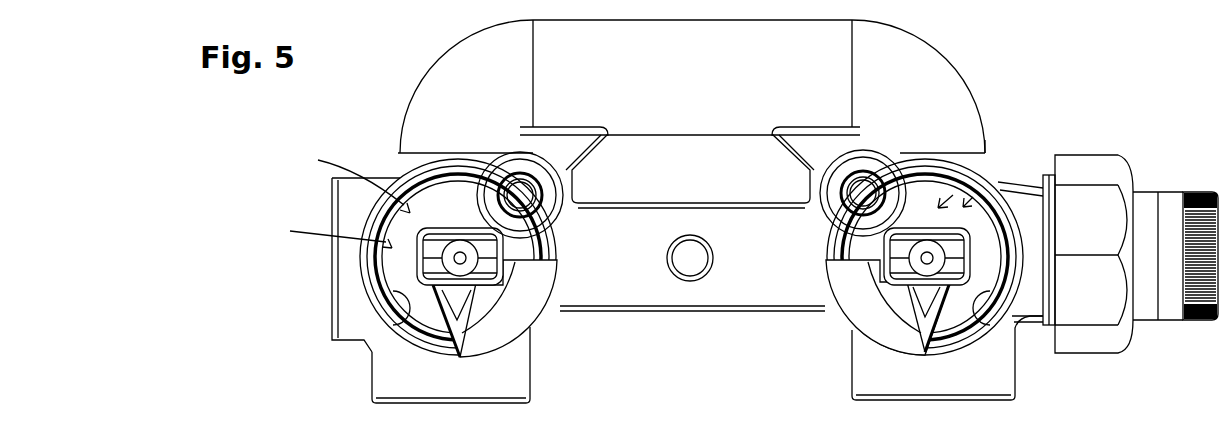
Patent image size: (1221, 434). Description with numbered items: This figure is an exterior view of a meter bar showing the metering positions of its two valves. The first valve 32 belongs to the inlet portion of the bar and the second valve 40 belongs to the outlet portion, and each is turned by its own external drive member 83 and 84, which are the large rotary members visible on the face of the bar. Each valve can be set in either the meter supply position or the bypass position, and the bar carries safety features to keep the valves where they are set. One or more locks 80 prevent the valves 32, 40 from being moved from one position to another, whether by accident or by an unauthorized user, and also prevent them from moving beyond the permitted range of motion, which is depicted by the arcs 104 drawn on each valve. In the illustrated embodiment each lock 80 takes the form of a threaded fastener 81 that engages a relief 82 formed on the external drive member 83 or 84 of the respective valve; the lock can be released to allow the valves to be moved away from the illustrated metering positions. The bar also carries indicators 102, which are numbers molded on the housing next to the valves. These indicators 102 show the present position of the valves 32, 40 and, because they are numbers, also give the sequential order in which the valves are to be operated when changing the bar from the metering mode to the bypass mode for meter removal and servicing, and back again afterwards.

The first valve 32 is at (351, 179).
The second valve 40 is at (993, 177).
The lock 80 is at (492, 160).
The threaded fastener 81 is at (518, 187).
The relief 82 is at (502, 172).
The external drive member 83 is at (329, 236).
The external drive member 84 is at (996, 176).
The indicators 102 is at (443, 119).
The arcs 104 is at (488, 301).